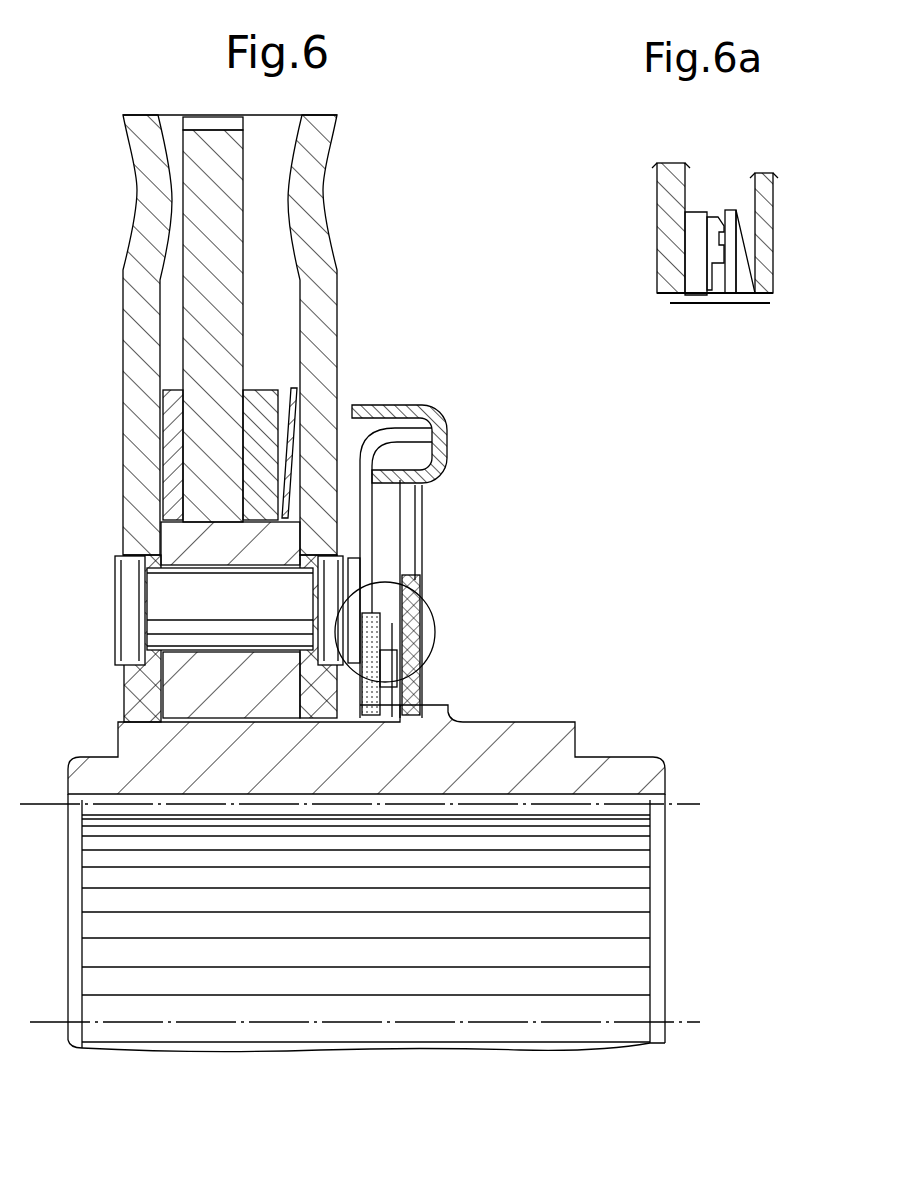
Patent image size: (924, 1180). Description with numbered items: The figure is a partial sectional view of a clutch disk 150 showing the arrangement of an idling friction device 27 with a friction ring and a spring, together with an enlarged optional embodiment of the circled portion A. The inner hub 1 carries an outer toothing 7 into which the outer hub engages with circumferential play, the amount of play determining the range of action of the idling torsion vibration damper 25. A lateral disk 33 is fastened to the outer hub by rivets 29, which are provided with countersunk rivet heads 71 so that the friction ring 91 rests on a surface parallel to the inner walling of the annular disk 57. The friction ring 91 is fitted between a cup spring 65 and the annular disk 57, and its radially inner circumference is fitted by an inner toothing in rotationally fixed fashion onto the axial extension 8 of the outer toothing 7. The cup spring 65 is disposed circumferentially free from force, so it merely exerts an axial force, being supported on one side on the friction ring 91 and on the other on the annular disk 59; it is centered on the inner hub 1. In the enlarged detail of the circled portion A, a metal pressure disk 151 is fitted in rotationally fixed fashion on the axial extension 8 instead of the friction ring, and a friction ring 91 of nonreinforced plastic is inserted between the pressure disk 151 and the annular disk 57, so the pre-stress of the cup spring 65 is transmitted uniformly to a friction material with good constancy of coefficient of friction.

In FIG. 6, the inner hub 1 is at (565, 740).
In FIG. 6, the outer toothing 7 is at (192, 683).
In FIG. 6, the axial extension 8 is at (387, 708).
In FIG. 6A, the axial extension 8 is at (716, 297).
In FIG. 6, the idling torsion vibration damper 25 is at (449, 414).
In FIG. 6, the idling friction device 27 is at (374, 612).
In FIG. 6, the rivets 29 is at (173, 628).
In FIG. 6, the lateral disk 33 is at (325, 277).
In FIG. 6, the annular disk 57 is at (350, 505).
In FIG. 6A, the annular disk 57 is at (668, 175).
In FIG. 6, the annular disk 59 is at (407, 582).
In FIG. 6A, the annular disk 59 is at (772, 210).
In FIG. 6, the cup spring 65 is at (395, 632).
In FIG. 6A, the cup spring 65 is at (752, 300).
In FIG. 6, the countersunk rivet heads 71 is at (396, 608).
In FIG. 6, the friction ring 91 is at (378, 662).
In FIG. 6A, the friction ring 91 is at (697, 296).
In FIG. 6, the clutch disk 150 is at (428, 324).
In FIG. 6A, the pressure disk 151 is at (733, 300).
In FIG. 6, the circled portion A is at (434, 650).